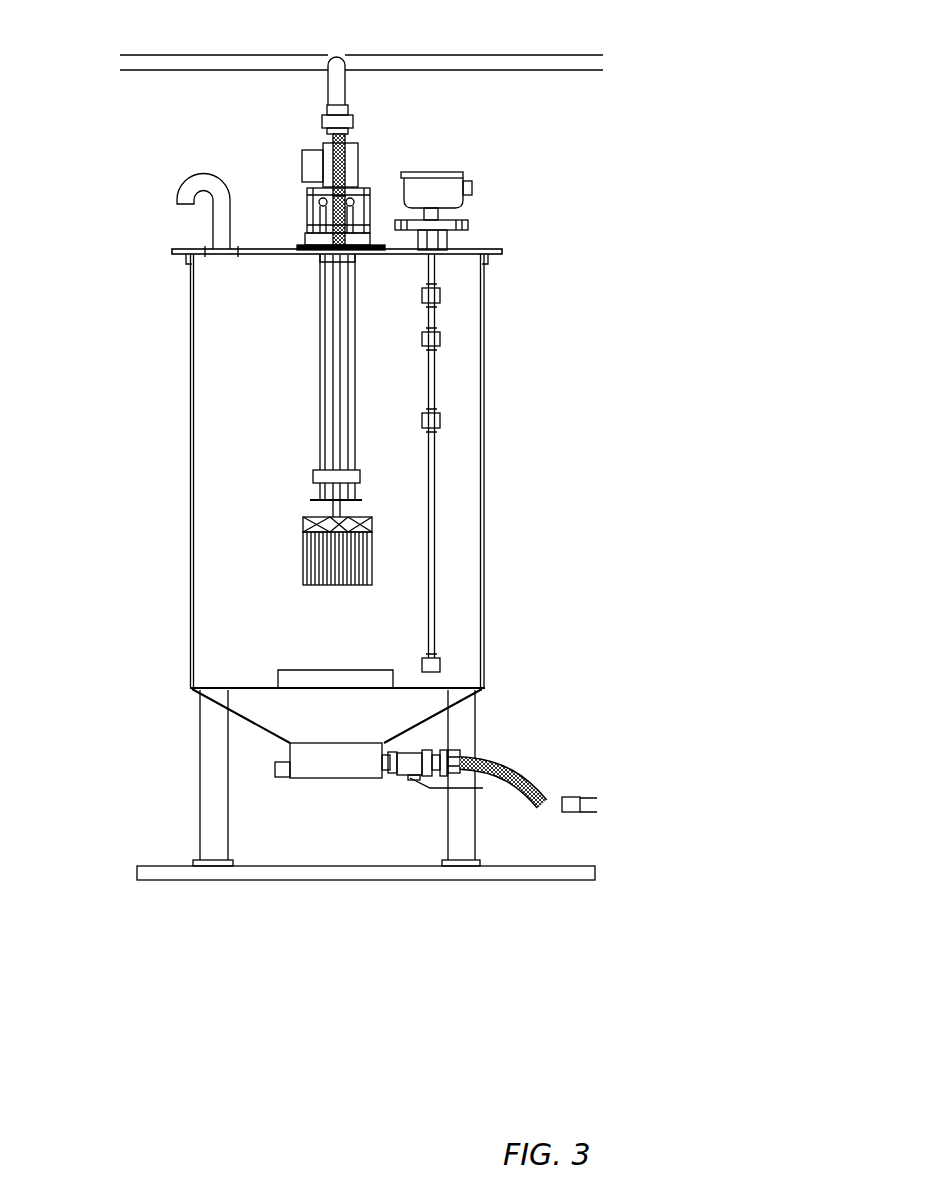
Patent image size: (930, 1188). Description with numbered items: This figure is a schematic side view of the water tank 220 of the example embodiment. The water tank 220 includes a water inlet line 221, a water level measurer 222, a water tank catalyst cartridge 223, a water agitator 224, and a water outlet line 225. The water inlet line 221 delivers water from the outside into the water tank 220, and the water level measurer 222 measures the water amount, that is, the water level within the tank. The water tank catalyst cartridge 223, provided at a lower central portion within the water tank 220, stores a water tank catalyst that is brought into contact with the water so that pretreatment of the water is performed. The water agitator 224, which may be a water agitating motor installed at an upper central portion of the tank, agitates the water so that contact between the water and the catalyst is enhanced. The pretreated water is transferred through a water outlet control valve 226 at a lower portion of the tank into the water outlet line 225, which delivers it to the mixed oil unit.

The water tank 220 is at (690, 104).
The water inlet line 221 is at (340, 58).
The water level measurer 222 is at (432, 486).
The water tank catalyst cartridge 223 is at (292, 672).
The water agitator 224 is at (365, 193).
The water outlet line 225 is at (490, 760).
The water outlet control valve 226 is at (402, 780).